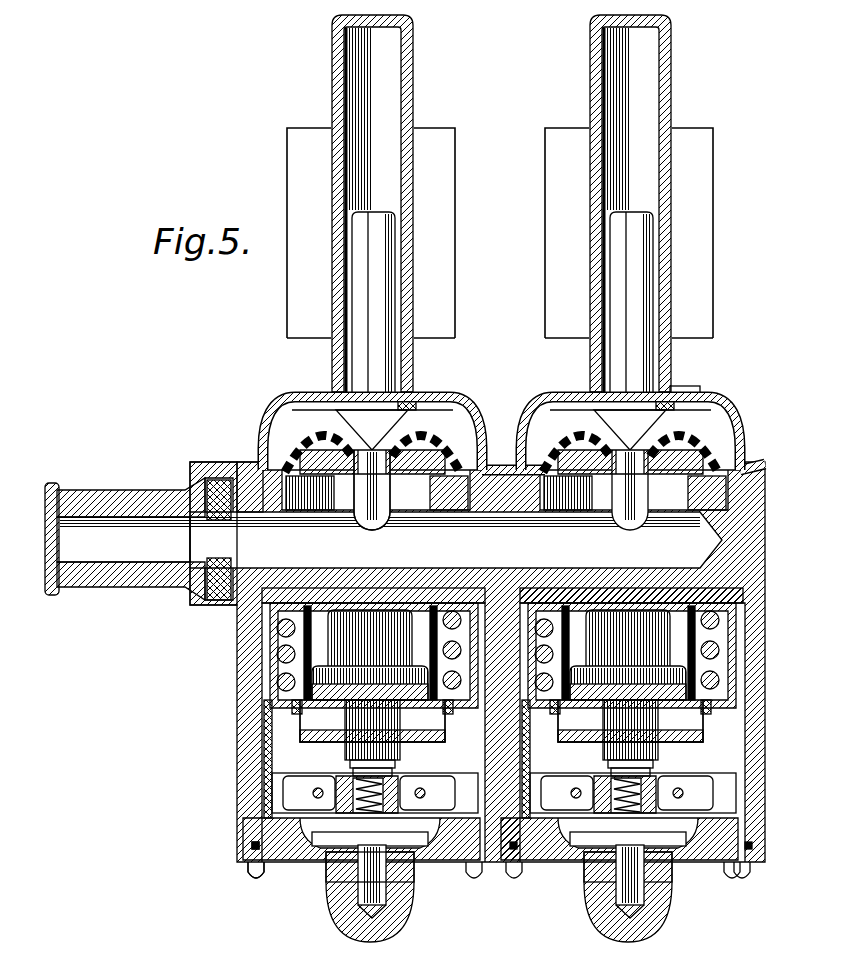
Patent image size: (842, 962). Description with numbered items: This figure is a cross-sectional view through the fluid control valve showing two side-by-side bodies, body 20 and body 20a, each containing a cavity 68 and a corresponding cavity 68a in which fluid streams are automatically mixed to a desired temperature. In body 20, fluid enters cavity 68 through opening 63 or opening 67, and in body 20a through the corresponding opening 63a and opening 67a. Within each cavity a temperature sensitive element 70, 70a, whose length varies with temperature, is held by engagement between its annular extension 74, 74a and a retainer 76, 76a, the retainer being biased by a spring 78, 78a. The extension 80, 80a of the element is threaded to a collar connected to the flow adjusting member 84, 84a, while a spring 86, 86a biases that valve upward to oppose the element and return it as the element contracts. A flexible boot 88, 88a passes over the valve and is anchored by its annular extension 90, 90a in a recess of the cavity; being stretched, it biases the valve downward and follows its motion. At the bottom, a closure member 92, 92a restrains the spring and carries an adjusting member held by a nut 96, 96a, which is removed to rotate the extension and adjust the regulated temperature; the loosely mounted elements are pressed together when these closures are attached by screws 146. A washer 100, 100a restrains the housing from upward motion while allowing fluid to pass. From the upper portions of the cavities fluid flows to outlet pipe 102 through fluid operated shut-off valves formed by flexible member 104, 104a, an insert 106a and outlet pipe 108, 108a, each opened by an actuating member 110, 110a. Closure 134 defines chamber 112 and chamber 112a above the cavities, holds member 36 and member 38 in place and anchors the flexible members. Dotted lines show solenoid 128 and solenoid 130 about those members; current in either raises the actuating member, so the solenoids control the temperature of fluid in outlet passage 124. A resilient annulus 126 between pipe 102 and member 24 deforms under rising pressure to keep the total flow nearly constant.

The body 20 is at (497, 464).
The body 20a is at (243, 462).
The outlet pipe 102 is at (215, 462).
The member 24 is at (85, 490).
The outlet passage 124 is at (58, 532).
The resilient annulus 126 is at (212, 480).
The member 36 is at (413, 70).
The member 38 is at (671, 92).
The solenoid 130 is at (287, 128).
The solenoid 128 is at (713, 128).
The actuating member 110a is at (392, 340).
The actuating member 110 is at (650, 340).
The chamber 112a is at (412, 400).
The chamber 112 is at (692, 404).
The closure 134 is at (700, 392).
The flexible member 104a is at (278, 432).
The flexible member 104 is at (708, 426).
The outlet pipe 108a is at (440, 430).
The outlet pipe 108 is at (704, 444).
The cavity 68a is at (445, 456).
The cavity 68 is at (718, 463).
The insert 106a is at (375, 532).
The washer 100a is at (237, 605).
The washer 100 is at (742, 600).
The temperature sensitive element 70a is at (335, 638).
The temperature sensitive element 70 is at (640, 638).
The opening 63a is at (262, 660).
The opening 63 is at (742, 660).
The spring 78a is at (285, 682).
The spring 78 is at (720, 672).
The flexible boot 88a is at (298, 704).
The flexible boot 88 is at (700, 735).
The retainer 76a is at (268, 716).
The retainer 76 is at (735, 712).
The annular extension 90a is at (264, 760).
The annular extension 90 is at (742, 770).
The annular extension 74a is at (360, 745).
The annular extension 74 is at (665, 735).
The flow adjusting member 84a is at (290, 795).
The flow adjusting member 84 is at (730, 790).
The extension 80a is at (370, 800).
The extension 80 is at (628, 800).
The opening 67a is at (500, 822).
The opening 67 is at (745, 796).
The nut 96a is at (338, 918).
The nut 96 is at (610, 918).
The spring 86a is at (322, 850).
The spring 86 is at (680, 850).
The closure member 92a is at (252, 850).
The closure member 92 is at (752, 852).
The screws 146 is at (742, 880).